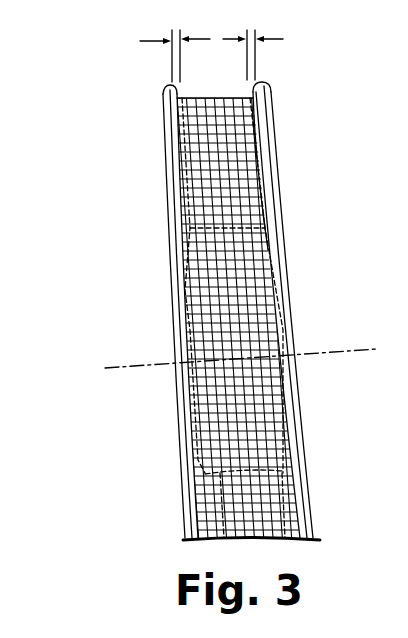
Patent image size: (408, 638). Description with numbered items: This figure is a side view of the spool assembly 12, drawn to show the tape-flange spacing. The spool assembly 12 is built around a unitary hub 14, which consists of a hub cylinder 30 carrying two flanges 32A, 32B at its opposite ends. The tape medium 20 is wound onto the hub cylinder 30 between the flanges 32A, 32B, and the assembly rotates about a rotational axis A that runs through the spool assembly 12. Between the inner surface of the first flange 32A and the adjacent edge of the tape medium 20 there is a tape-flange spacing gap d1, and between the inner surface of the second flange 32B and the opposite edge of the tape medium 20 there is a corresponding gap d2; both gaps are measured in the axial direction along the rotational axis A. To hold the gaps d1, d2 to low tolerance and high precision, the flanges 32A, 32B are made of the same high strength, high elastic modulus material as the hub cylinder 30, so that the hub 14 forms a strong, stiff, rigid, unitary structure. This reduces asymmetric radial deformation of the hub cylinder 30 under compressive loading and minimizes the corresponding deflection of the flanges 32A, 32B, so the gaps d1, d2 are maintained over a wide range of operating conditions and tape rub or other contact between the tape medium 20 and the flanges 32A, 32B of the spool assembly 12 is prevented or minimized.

The spool assembly 12 is at (200, 294).
The unitary hub 14 is at (281, 305).
The tape medium 20 is at (287, 502).
The hub cylinder 30 is at (215, 228).
The flange 32A is at (177, 405).
The flange 32B is at (286, 175).
The rotational axis A is at (249, 353).
The tape-flange spacing gap d1 is at (166, 56).
The tape-flange spacing gap d2 is at (264, 55).